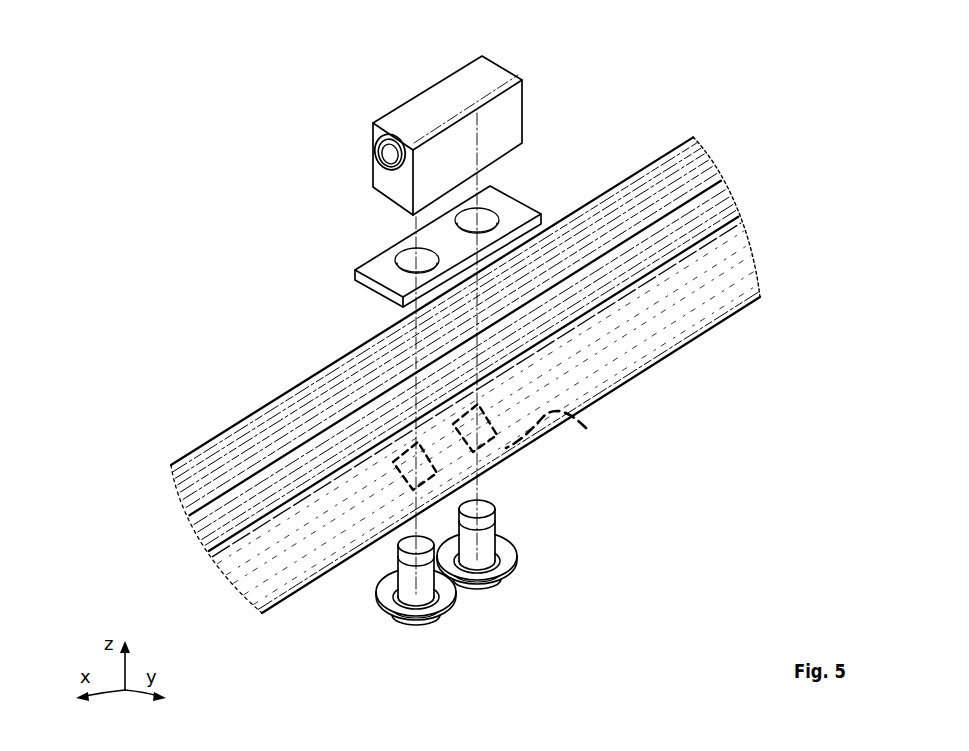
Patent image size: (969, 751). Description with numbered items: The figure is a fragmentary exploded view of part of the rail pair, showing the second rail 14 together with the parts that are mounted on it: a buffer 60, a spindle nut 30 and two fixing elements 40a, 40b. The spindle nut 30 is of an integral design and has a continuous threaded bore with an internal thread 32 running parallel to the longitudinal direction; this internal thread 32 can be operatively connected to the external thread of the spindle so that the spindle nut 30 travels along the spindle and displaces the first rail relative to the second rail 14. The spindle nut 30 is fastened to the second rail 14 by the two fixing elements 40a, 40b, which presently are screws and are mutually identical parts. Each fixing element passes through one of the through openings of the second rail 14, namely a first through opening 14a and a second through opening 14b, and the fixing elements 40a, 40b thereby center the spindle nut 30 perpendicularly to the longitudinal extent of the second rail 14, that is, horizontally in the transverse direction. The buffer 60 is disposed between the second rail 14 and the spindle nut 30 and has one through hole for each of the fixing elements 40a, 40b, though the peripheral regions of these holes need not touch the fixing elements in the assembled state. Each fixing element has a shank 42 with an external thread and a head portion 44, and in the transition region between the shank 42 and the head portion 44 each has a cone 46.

The second rail 14 is at (272, 438).
The first through opening 14a is at (385, 425).
The second through opening 14b is at (563, 430).
The spindle nut 30 is at (502, 122).
The internal thread 32 is at (381, 152).
The buffer 60 is at (510, 207).
The first fixing element 40a is at (355, 602).
The second fixing element 40b is at (549, 518).
The shank 42 is at (490, 525).
The head portion 44 is at (503, 573).
The cone 46 is at (503, 540).